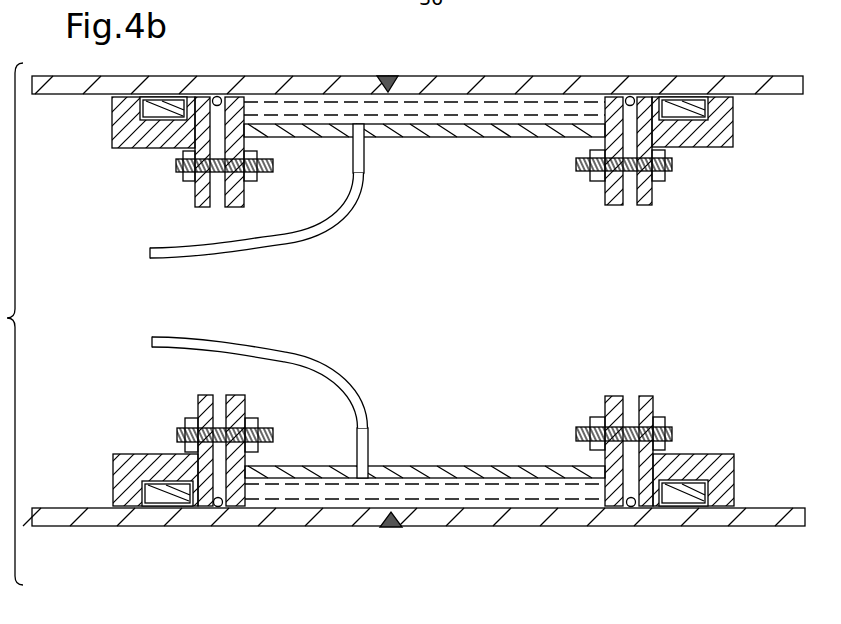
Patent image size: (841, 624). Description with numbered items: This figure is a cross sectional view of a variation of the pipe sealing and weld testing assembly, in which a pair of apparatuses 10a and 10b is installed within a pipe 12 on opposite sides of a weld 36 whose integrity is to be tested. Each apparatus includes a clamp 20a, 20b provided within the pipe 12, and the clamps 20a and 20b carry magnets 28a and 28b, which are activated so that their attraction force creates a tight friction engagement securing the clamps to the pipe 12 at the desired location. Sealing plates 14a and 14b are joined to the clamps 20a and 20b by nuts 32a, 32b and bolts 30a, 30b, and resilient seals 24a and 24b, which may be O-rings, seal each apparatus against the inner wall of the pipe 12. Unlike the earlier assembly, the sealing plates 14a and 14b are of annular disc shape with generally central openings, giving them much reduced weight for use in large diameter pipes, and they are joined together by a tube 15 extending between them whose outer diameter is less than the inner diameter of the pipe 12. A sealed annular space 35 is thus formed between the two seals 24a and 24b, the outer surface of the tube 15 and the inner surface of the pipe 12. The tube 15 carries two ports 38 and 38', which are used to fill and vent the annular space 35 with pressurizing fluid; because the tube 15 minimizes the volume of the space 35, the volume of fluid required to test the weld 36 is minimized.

The apparatus 10a is at (714, 233).
The apparatus 10b is at (113, 223).
The pipe 12 is at (765, 520).
The sealing plate 14a is at (613, 203).
The sealing plate 14b is at (235, 197).
The tube 15 is at (475, 128).
The clamp 20a is at (727, 132).
The clamp 20b is at (123, 137).
The resilient seal 24a is at (631, 96).
The resilient seal 24b is at (217, 96).
The magnet 28a is at (688, 102).
The magnet 28b is at (165, 103).
The bolt 30a is at (577, 162).
The bolt 30b is at (176, 166).
The nut 32a is at (592, 186).
The nut 32b is at (190, 183).
The sealed annular space 35 is at (533, 103).
The weld 36 is at (388, 75).
The port 38 is at (226, 204).
The port 38' is at (223, 400).